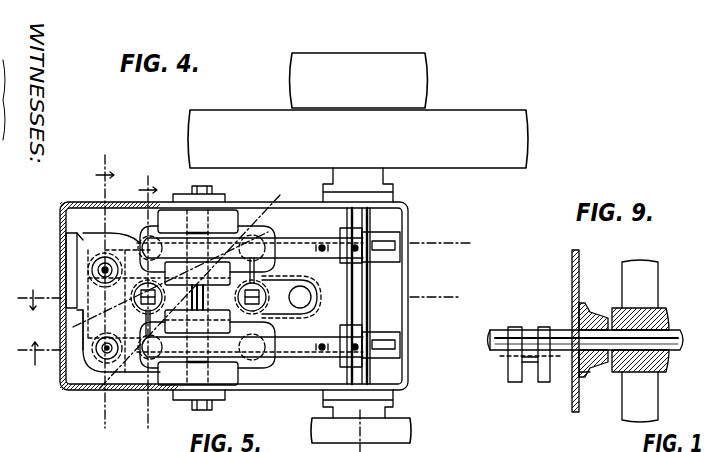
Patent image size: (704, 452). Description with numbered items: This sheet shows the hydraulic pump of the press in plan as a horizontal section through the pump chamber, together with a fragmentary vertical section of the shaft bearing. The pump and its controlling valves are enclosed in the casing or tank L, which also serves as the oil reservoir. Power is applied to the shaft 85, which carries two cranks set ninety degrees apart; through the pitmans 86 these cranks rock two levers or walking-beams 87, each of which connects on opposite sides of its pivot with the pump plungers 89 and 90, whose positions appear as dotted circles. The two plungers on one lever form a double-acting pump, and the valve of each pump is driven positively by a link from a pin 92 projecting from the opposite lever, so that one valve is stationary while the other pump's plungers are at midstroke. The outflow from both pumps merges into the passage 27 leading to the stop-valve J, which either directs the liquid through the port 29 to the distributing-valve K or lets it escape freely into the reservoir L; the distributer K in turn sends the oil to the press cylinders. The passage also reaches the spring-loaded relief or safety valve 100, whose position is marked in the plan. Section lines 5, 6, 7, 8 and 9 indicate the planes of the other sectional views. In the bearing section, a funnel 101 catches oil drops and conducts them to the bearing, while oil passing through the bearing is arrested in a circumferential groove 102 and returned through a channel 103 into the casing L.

In FIG. 4, the section line 5 5 is at (238, 326).
In FIG. 4, the section line 6 6 is at (245, 272).
In FIG. 4, the section line 7 7 is at (105, 282).
In FIG. 4, the section line 8 8 is at (148, 292).
In FIG. 4, the section line 9 9 is at (357, 92).
In FIG. 4, the port or passage 27 is at (108, 357).
In FIG. 4, the port 29 is at (92, 308).
In FIG. 4, the shaft 85 is at (358, 297).
In FIG. 9, the shaft 85 is at (560, 332).
In FIG. 4, the pitmans 86 is at (397, 245).
In FIG. 4, the levers or walking-beams 87 is at (290, 240).
In FIG. 4, the pump piston or plunger 89 is at (252, 238).
In FIG. 4, the pump piston or plunger 90 is at (150, 235).
In FIG. 4, the pin 92 is at (150, 312).
In FIG. 4, the relief or safety valve 100 is at (330, 291).
In FIG. 9, the funnel 101 is at (556, 312).
In FIG. 9, the circumferential groove 102 is at (608, 318).
In FIG. 9, the channel 103 is at (588, 372).
In FIG. 4, the distributing-valve K is at (102, 263).
In FIG. 4, the stop-valve J is at (99, 357).
In FIG. 9, the casing or tank L is at (572, 398).